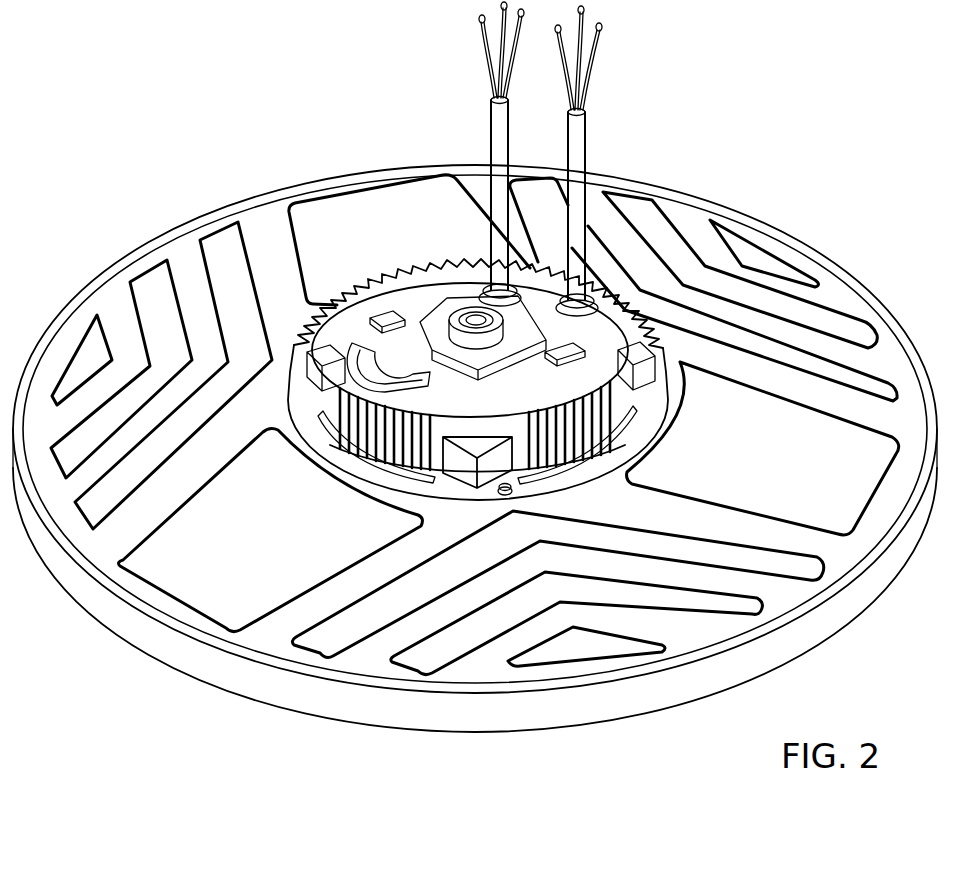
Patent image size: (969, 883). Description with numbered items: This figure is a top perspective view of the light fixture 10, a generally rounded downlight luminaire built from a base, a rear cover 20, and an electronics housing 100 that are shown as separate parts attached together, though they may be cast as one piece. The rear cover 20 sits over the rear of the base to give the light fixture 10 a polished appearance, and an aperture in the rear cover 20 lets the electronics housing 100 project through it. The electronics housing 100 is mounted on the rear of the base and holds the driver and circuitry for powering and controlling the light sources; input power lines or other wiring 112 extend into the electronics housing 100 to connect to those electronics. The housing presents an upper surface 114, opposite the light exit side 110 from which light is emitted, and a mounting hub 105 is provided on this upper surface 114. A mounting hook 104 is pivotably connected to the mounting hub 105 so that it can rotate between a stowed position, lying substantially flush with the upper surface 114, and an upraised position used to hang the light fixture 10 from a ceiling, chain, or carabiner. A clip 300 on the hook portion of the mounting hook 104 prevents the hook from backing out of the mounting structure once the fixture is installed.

The light fixture 10 is at (827, 36).
The rear cover 20 is at (800, 333).
The electronics housing 100 is at (577, 373).
The mounting hook 104 is at (350, 343).
The mounting hub 105 is at (479, 312).
The light exit side 110 is at (235, 725).
The wiring 112 is at (590, 120).
The upper surface 114 is at (443, 270).
The clip 300 is at (396, 318).